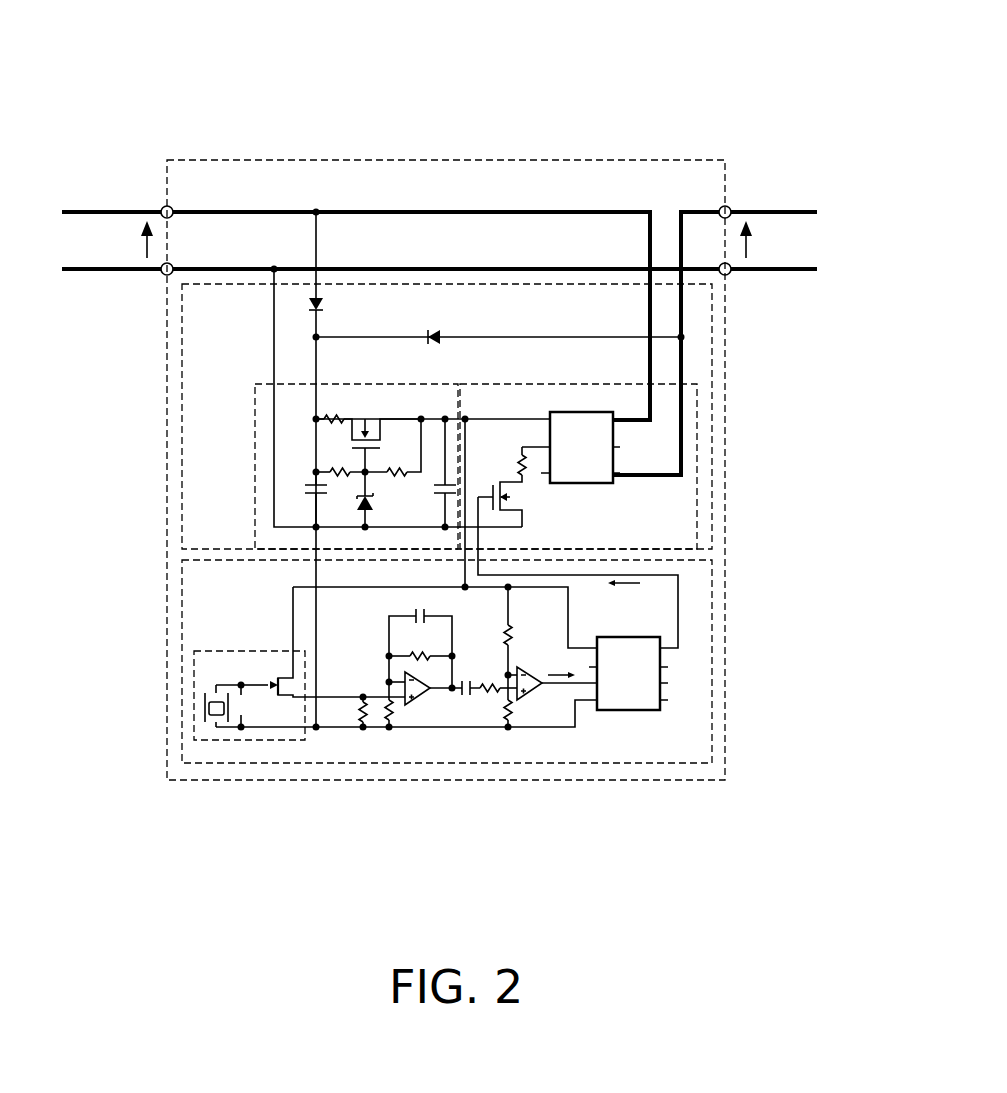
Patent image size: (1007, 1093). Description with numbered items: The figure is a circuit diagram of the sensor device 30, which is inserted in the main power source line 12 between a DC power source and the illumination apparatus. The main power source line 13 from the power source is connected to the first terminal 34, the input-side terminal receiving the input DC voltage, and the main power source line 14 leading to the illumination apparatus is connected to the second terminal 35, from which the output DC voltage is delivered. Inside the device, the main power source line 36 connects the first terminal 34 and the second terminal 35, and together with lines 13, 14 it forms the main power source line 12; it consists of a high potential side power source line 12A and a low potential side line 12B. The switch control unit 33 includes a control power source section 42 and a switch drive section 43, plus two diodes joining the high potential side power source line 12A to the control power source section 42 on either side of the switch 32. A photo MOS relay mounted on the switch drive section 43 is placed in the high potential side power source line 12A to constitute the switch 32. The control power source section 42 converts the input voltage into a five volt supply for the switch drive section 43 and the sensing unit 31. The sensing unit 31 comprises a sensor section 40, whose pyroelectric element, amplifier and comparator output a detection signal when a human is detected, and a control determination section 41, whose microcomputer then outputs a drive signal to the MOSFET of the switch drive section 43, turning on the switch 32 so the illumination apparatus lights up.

The sensor device 30 is at (744, 56).
The main power source line 13 is at (84, 210).
The main power source line 14 is at (785, 210).
The first terminal 34 is at (170, 205).
The second terminal 35 is at (722, 205).
The main power source line 12 is at (446, 272).
The main power source line 36 is at (567, 109).
The high potential side power source line 12A is at (503, 209).
The low potential side power source line 12B is at (555, 267).
The switch control unit 33 is at (712, 377).
The switch 32 is at (613, 462).
The control power source section 42 is at (255, 460).
The switch drive section 43 is at (697, 515).
The sensor section 40 is at (522, 764).
The control determination section 41 is at (588, 781).
The sensing unit 31 is at (607, 846).